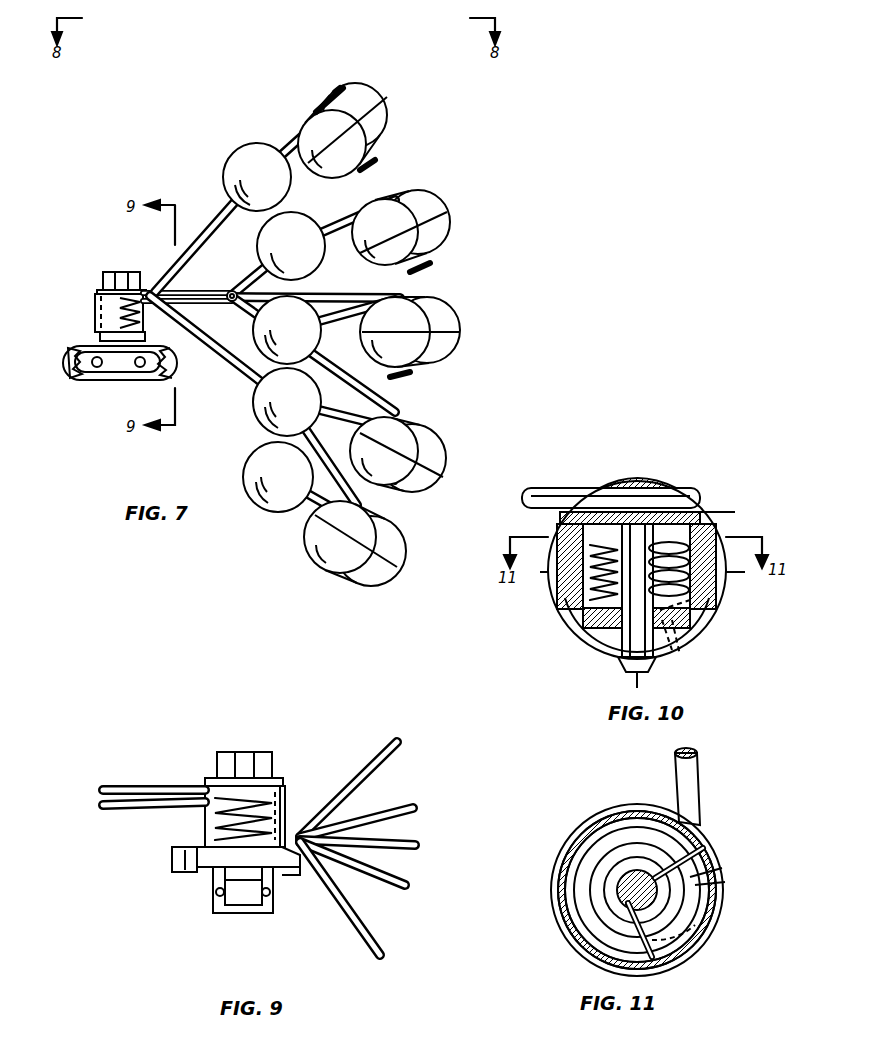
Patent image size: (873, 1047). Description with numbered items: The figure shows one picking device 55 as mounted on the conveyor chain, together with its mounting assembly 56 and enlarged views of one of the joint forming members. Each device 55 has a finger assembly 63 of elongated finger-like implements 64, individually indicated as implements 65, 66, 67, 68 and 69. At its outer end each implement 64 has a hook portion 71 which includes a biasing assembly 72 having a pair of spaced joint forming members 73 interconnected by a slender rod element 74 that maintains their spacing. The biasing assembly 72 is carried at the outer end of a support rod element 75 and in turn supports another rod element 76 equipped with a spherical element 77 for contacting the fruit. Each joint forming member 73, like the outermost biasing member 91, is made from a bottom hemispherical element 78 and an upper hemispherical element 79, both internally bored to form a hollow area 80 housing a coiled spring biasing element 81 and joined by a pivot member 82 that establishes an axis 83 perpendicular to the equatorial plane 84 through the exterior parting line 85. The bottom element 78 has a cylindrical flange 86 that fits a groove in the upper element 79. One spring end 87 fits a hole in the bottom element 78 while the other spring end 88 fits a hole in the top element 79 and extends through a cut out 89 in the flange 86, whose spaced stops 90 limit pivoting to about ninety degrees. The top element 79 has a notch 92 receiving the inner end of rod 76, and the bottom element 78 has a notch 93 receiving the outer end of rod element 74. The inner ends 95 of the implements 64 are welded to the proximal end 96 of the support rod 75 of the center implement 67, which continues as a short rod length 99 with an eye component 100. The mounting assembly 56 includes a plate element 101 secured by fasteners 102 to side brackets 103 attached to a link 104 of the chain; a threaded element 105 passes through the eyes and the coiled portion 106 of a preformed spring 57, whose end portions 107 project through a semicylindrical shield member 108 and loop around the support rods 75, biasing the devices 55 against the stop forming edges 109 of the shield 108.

In FIG. 7, the picking device 55 is at (482, 280).
In FIG. 7, the mounting assembly 56 is at (103, 286).
In FIG. 9, the mounting assembly 56 is at (205, 775).
In FIG. 9, the preformed spring 57 is at (140, 810).
In FIG. 7, the finger assembly 63 is at (230, 362).
In FIG. 7, the finger-like implements 64 is at (255, 415).
In FIG. 7, the finger-like implement 65 is at (385, 105).
In FIG. 7, the finger-like implement 66 is at (450, 222).
In FIG. 7, the center implement 67 is at (460, 322).
In FIG. 9, the center implement 67 is at (417, 835).
In FIG. 7, the finger-like implement 68 is at (447, 455).
In FIG. 7, the finger-like implement 69 is at (405, 556).
In FIG. 7, the hook portion 71 is at (296, 125).
In FIG. 7, the biasing assembly 72 is at (380, 158).
In FIG. 7, the joint forming members 73 is at (350, 85).
In FIG. 11, the joint forming members 73 is at (551, 880).
In FIG. 7, the rod element 74 is at (372, 175).
In FIG. 10, the rod element 74 is at (682, 665).
In FIG. 11, the rod element 74 is at (700, 790).
In FIG. 7, the support rod element 75 is at (258, 258).
In FIG. 9, the support rod element 75 is at (370, 895).
In FIG. 7, the rod element 76 is at (290, 150).
In FIG. 10, the rod element 76 is at (560, 480).
In FIG. 7, the spherical element 77 is at (250, 147).
In FIG. 10, the bottom hemispherical element 78 is at (575, 630).
In FIG. 10, the upper hemispherical element 79 is at (725, 520).
In FIG. 10, the hollow area 80 is at (700, 515).
In FIG. 10, the coiled spring biasing element 81 is at (572, 608).
In FIG. 11, the coiled spring biasing element 81 is at (590, 915).
In FIG. 10, the pivot member 82 is at (640, 478).
In FIG. 11, the pivot member 82 is at (605, 862).
In FIG. 10, the axis 83 is at (635, 460).
In FIG. 10, the equatorial plane 84 is at (728, 575).
In FIG. 10, the parting line 85 is at (575, 592).
In FIG. 10, the cylindrical flange 86 is at (565, 538).
In FIG. 11, the cylindrical flange 86 is at (600, 818).
In FIG. 11, the spring end 87 is at (700, 955).
In FIG. 11, the spring end 88 is at (722, 860).
In FIG. 11, the cut out 89 is at (725, 880).
In FIG. 11, the stops 90 is at (705, 835).
In FIG. 7, the outermost biasing member 91 is at (328, 172).
In FIG. 10, the outermost biasing member 91 is at (695, 618).
In FIG. 11, the outermost biasing member 91 is at (722, 912).
In FIG. 10, the notch 92 is at (670, 482).
In FIG. 10, the notch 93 is at (680, 625).
In FIG. 7, the inner end 95 is at (222, 292).
In FIG. 10, the inner end 95 is at (597, 655).
In FIG. 9, the inner end 95 is at (350, 812).
In FIG. 7, the proximal end 96 is at (235, 302).
In FIG. 9, the rod length 99 is at (285, 878).
In FIG. 9, the eye component 100 is at (285, 850).
In FIG. 9, the plate element 101 is at (172, 860).
In FIG. 9, the fasteners 102 is at (185, 872).
In FIG. 7, the side brackets 103 is at (100, 375).
In FIG. 9, the side brackets 103 is at (213, 910).
In FIG. 9, the link 104 is at (243, 915).
In FIG. 9, the threaded element 105 is at (272, 760).
In FIG. 7, the coiled portion 106 is at (140, 318).
In FIG. 9, the coiled portion 106 is at (210, 822).
In FIG. 7, the end portions 107 is at (300, 300).
In FIG. 9, the end portions 107 is at (405, 870).
In FIG. 7, the shield member 108 is at (95, 320).
In FIG. 9, the shield member 108 is at (285, 790).
In FIG. 9, the stop forming edges 109 is at (285, 810).